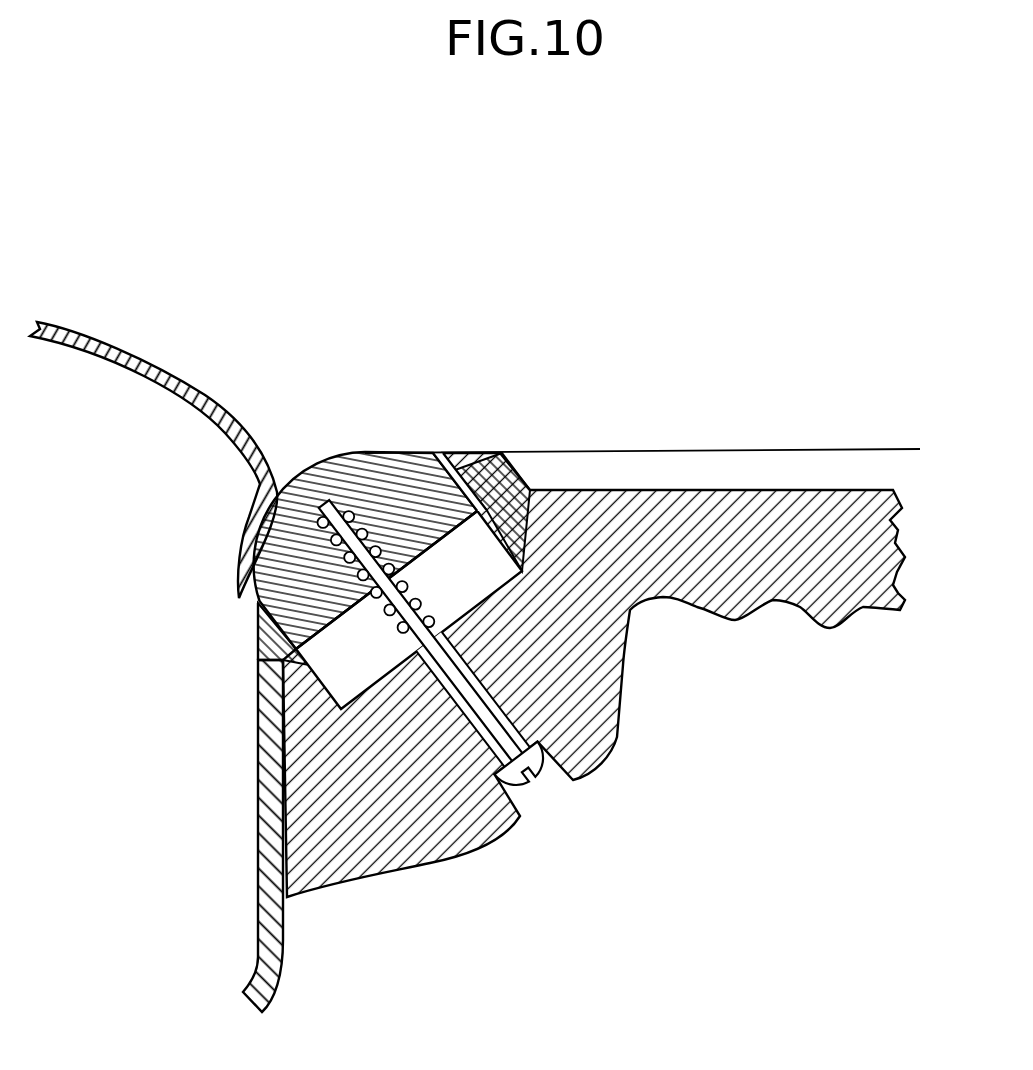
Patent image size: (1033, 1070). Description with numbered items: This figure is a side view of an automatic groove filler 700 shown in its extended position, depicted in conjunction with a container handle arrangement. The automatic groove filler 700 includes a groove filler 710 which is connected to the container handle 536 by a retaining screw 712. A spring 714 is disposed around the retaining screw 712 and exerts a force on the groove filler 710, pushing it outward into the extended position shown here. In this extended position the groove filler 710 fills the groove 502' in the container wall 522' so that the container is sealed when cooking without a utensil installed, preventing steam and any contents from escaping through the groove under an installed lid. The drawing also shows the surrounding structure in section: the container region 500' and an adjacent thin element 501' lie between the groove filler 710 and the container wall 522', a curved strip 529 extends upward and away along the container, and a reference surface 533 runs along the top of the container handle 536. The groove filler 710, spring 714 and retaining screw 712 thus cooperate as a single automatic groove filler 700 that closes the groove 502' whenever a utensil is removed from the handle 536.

The automatic groove filler 700 is at (377, 628).
The groove filler 710 is at (360, 447).
The spring 714 is at (386, 530).
The retaining screw 712 is at (537, 788).
The plate 502' is at (356, 515).
The thin layer 501' is at (185, 628).
The frame member 500' is at (192, 669).
The wall flange 522' is at (207, 836).
The weather strip 529 is at (170, 398).
The glass pane 533 is at (636, 471).
The container handle 536 is at (642, 710).